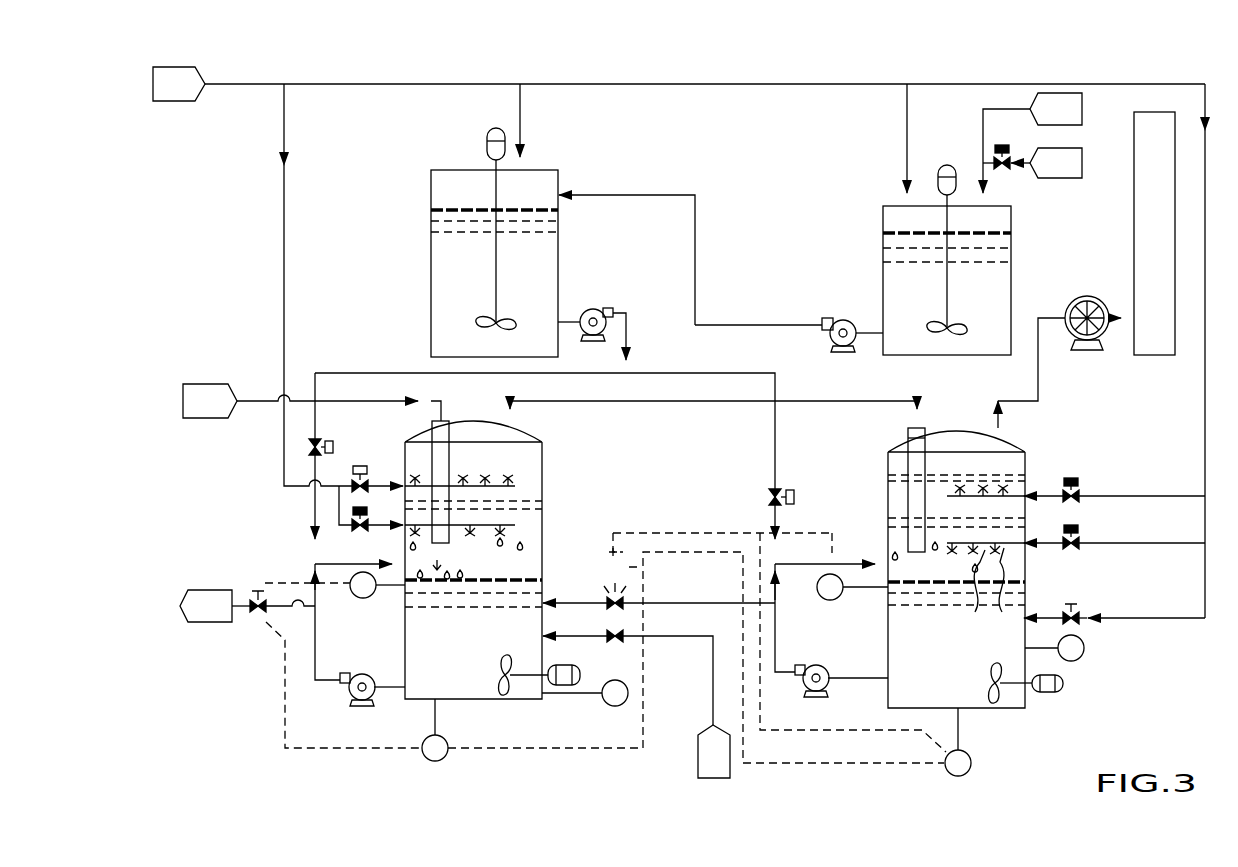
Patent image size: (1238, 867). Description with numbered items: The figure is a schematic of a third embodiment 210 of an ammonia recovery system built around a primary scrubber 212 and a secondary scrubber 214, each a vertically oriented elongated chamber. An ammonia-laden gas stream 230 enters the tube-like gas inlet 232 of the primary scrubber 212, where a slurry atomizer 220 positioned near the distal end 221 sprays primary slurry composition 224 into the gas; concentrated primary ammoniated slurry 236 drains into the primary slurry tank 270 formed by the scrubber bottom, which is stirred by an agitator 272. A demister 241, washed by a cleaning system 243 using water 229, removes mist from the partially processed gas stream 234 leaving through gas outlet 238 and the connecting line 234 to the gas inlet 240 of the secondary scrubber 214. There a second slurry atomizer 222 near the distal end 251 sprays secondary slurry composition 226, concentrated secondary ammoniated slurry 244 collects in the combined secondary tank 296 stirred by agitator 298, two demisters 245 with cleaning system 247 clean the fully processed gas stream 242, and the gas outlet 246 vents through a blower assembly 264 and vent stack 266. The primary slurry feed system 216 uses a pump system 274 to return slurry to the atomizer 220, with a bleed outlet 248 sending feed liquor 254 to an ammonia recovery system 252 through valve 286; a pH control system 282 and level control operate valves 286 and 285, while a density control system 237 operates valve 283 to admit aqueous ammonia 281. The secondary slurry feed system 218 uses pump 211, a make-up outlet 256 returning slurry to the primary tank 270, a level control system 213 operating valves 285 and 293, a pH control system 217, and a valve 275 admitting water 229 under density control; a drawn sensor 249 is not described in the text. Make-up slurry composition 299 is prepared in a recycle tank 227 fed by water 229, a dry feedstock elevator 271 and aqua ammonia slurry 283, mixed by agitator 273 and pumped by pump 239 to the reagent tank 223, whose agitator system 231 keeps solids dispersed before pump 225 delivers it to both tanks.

The third embodiment of ammonia recovery system 210 is at (264, 75).
The water 229 is at (679, 84).
The agitator system 231 is at (487, 138).
The make-up slurry composition 299 is at (441, 210).
The reagent tank 223 is at (431, 268).
The pump 225 is at (604, 308).
The agitator or mixer 273 is at (947, 165).
The dry feedstock elevator 271 is at (1032, 143).
The valve 283 is at (620, 627).
The recycle tank 227 is at (883, 260).
The pump 239 is at (838, 320).
The vent stack 266 is at (1134, 232).
The blower assembly 264 is at (1083, 297).
The fully processed gas stream 242 is at (1038, 386).
The gas outlet 246 is at (994, 415).
The gas inlet 240 is at (905, 433).
The secondary scrubber 214 is at (1031, 440).
The gas stream 230 is at (312, 402).
The gas outlet 238 is at (506, 416).
The gas inlet 232 is at (432, 421).
The primary scrubber 212 is at (550, 433).
The cleaning system 243 is at (505, 487).
The demister 241 is at (520, 503).
The partially processed gas stream 234 is at (713, 403).
The valve 293 is at (790, 488).
The cleaning system 247 is at (1015, 545).
The distal end 251 is at (905, 527).
The demisters 245 is at (1000, 473).
The secondary slurry feed system 218 is at (878, 562).
The primary slurry feed system 216 is at (315, 527).
The distal end 221 is at (404, 546).
The slurry atomizer 220 is at (440, 566).
The concentrated primary ammoniated slurry 236 is at (528, 545).
The slurry atomizer 222 is at (905, 560).
The secondary slurry composition 226 is at (1008, 586).
The feed liquor 254 is at (256, 591).
The primary slurry composition 224 is at (478, 580).
The valve 285 is at (611, 596).
The make-up outlet 256 is at (447, 758).
The ammonia recovery system 252 is at (206, 606).
The valve 286 is at (255, 616).
The bleed outlet 248 is at (298, 612).
The pH control system 282 is at (365, 598).
The agitator 272 is at (580, 668).
The valve 275 is at (1073, 605).
The sensor 249 is at (1084, 650).
The pump system 274 is at (350, 700).
The primary slurry tank 270 is at (470, 700).
The density control system 237 is at (604, 703).
The pump 211 is at (826, 690).
The concentrated secondary ammoniated slurry 244 is at (978, 601).
The agitator 298 is at (1065, 686).
The aqueous ammonia 281 is at (714, 751).
The secondary tank 296 is at (995, 710).
The level control system 213 is at (971, 765).
The pH control system 217 is at (828, 600).